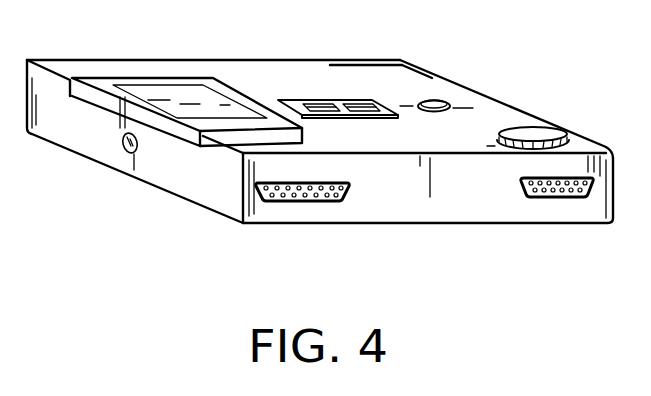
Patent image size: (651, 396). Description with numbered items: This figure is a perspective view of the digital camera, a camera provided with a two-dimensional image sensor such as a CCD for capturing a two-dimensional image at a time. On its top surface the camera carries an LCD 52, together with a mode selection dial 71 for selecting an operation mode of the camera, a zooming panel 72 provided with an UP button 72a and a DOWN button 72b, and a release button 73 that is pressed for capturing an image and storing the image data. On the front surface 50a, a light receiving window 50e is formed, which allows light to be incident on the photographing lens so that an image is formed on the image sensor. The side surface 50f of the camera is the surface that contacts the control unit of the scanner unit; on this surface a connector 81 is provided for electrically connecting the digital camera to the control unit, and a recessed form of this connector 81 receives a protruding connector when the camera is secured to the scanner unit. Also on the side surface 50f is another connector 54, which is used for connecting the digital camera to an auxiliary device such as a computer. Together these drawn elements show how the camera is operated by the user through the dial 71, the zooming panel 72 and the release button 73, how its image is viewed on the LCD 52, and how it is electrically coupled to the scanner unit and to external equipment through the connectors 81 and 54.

The front surface 50a is at (190, 182).
The light receiving window 50e is at (122, 140).
The side surface 50f is at (410, 203).
The LCD 52 is at (195, 90).
The connector 54 is at (297, 197).
The mode selection dial 71 is at (540, 127).
The zooming panel 72 is at (338, 99).
The UP button 72a is at (318, 103).
The DOWN button 72b is at (363, 108).
The release button 73 is at (433, 100).
The connector 81 is at (552, 198).